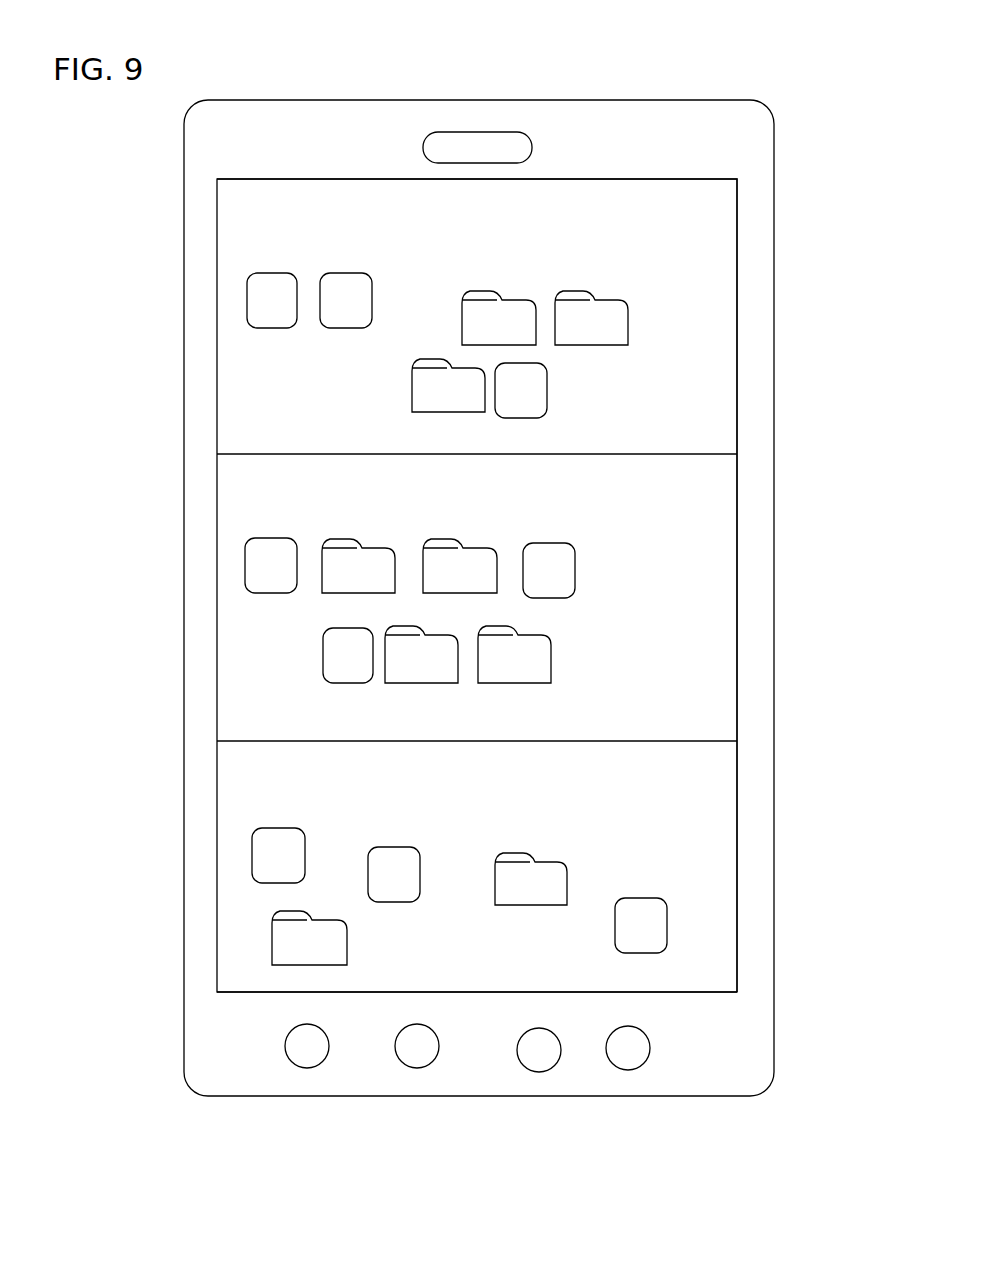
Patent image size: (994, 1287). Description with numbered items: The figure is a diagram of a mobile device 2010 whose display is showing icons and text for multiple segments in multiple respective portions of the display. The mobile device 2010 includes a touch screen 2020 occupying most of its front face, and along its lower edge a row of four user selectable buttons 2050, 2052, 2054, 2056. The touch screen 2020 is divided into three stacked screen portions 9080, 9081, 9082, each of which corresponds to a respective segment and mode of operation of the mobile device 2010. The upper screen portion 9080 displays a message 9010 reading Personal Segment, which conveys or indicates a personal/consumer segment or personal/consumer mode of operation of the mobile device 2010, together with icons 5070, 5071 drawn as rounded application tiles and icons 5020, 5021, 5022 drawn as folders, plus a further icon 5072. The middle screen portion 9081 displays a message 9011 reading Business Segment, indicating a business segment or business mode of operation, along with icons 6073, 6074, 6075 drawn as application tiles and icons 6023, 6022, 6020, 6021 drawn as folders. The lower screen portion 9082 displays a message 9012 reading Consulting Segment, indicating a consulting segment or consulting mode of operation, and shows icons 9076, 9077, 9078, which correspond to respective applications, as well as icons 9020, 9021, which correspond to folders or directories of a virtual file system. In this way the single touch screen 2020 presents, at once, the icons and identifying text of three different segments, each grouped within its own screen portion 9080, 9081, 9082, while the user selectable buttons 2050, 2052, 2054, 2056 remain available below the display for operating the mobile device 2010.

The mobile device 2010 is at (477, 100).
The touch screen 2020 is at (292, 178).
The message 9010 is at (370, 209).
The message 9011 is at (362, 488).
The message 9012 is at (347, 781).
The screen portion 9080 is at (690, 213).
The screen portion 9081 is at (702, 572).
The screen portion 9082 is at (707, 843).
The icon 5070 is at (253, 315).
The icon 5071 is at (327, 315).
The icon 5020 is at (469, 341).
The icon 5021 is at (563, 341).
The icon 5022 is at (419, 408).
The icon 5072 is at (502, 405).
The icon 6073 is at (252, 580).
The icon 6023 is at (330, 589).
The icon 6022 is at (431, 589).
The icon 6074 is at (530, 585).
The icon 6075 is at (329, 670).
The icon 6020 is at (392, 677).
The icon 6021 is at (485, 677).
The icon 9076 is at (259, 870).
The icon 9077 is at (375, 889).
The icon 9021 is at (280, 960).
The icon 9020 is at (503, 901).
The icon 9078 is at (622, 940).
The user selectable button 2050 is at (320, 1066).
The user selectable button 2052 is at (430, 1066).
The user selectable button 2054 is at (551, 1068).
The user selectable button 2056 is at (648, 1066).